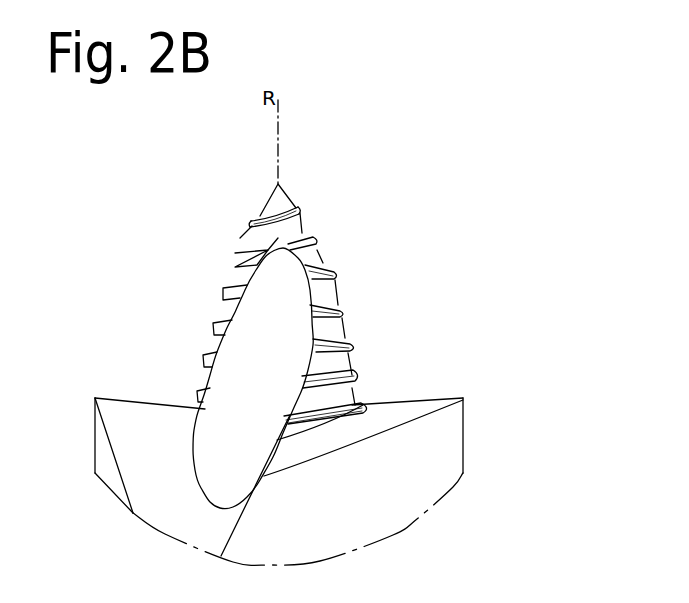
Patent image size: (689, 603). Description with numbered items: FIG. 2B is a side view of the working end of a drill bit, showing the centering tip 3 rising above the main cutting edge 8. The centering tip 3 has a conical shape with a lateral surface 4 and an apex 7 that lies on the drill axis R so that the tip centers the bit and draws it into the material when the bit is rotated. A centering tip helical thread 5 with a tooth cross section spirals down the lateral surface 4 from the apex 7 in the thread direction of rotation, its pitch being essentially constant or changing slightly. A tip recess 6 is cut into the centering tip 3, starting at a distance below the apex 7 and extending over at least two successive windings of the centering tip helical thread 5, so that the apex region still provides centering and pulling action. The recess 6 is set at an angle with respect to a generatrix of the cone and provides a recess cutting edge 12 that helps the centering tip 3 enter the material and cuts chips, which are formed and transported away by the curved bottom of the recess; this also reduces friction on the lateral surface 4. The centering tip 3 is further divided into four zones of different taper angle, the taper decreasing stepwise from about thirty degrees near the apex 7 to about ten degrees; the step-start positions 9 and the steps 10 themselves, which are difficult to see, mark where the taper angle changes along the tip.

The centering tip 3 is at (168, 252).
The lateral surface 4 is at (322, 292).
The centering tip helical thread 5 is at (251, 223).
The tip recess 6 is at (268, 323).
The apex 7 is at (279, 189).
The main cutting edge 8 is at (112, 398).
The step-start position 9 is at (234, 252).
The step 10 is at (205, 363).
The recess cutting edge 12 is at (232, 276).